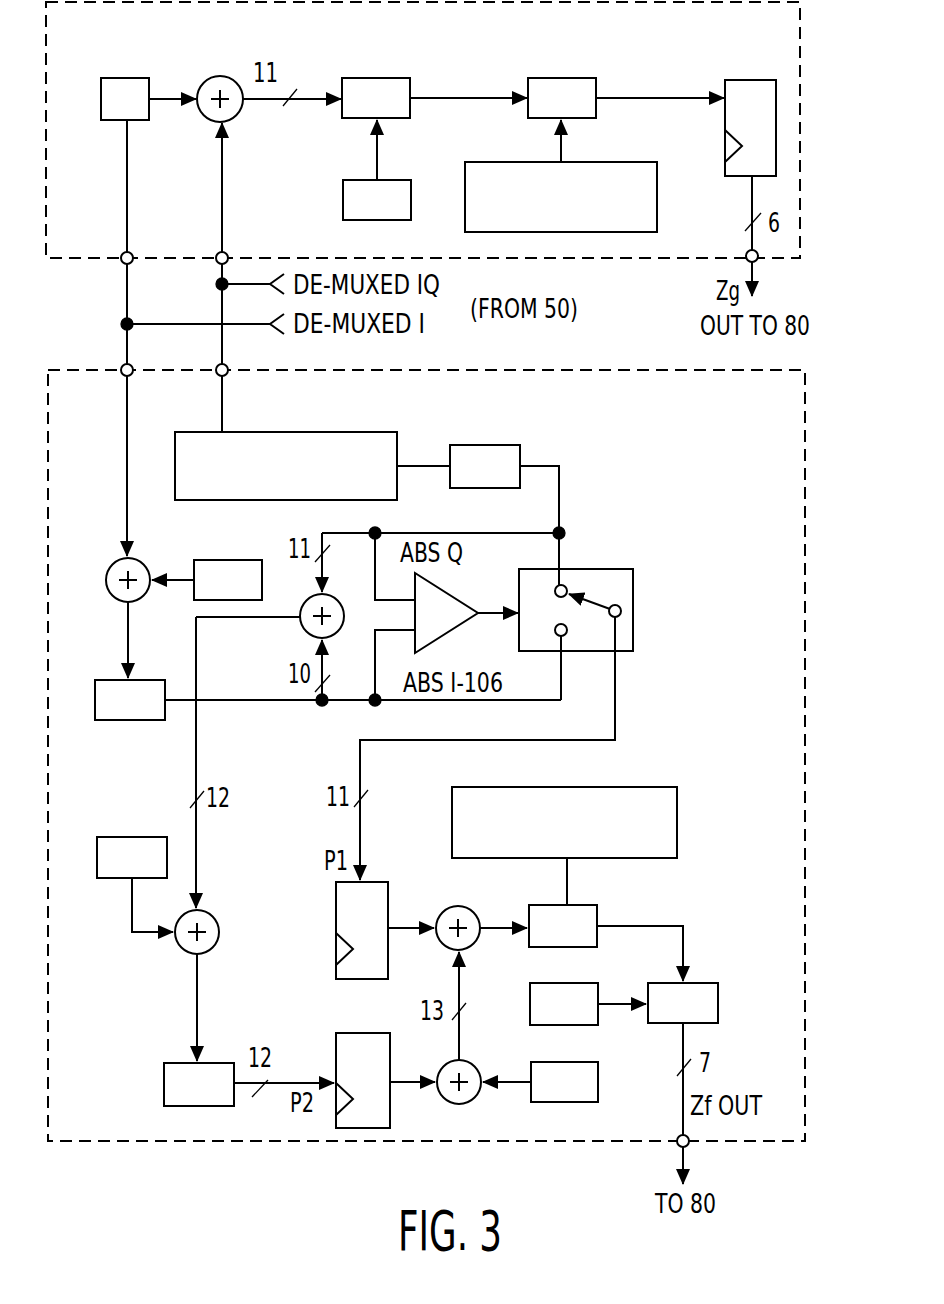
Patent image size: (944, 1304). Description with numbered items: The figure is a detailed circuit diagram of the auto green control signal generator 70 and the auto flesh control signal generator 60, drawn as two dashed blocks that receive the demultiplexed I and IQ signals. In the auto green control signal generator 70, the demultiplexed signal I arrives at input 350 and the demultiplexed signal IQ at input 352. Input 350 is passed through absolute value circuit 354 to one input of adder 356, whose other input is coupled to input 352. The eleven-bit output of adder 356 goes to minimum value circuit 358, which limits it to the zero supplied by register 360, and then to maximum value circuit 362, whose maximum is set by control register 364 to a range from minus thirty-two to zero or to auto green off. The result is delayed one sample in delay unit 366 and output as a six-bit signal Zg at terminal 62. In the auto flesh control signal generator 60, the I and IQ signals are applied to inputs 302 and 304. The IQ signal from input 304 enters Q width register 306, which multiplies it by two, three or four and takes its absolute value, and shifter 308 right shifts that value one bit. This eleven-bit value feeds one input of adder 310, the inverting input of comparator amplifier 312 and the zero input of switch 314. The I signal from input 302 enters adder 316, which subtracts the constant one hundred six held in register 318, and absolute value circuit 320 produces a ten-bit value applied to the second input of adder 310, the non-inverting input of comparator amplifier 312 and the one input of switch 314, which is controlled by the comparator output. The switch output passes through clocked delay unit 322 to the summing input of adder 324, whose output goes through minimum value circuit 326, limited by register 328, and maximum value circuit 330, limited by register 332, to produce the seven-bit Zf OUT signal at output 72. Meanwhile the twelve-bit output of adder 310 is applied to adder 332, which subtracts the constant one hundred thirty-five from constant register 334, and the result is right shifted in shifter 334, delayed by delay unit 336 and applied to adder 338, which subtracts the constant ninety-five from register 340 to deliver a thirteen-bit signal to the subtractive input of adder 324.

The auto green control signal generator 70 is at (759, 44).
The auto flesh control signal generator 60 is at (759, 452).
The absolute value circuit 354 is at (120, 78).
The adder 356 is at (204, 118).
The minimum value circuit 358 is at (350, 118).
The register 360 is at (343, 208).
The maximum value circuit 362 is at (536, 118).
The control register 364 is at (592, 162).
The delay unit 366 is at (725, 170).
The terminal 62 is at (760, 258).
The input 350 is at (122, 253).
The input 352 is at (217, 253).
The input 302 is at (122, 365).
The input 304 is at (217, 365).
The Q width register 306 is at (195, 432).
The shifter 308 is at (522, 455).
The adder 316 is at (110, 566).
The register 318 is at (205, 560).
The adder 310 is at (307, 632).
The comparator amplifier 312 is at (518, 588).
The switch 314 is at (600, 569).
The absolute value circuit 320 is at (125, 720).
The constant register / shifter 334 is at (128, 837).
The adder / register 332 is at (184, 950).
The clocked delay unit 322 is at (336, 906).
The adder 324 is at (448, 910).
The register 328 is at (672, 787).
The minimum value circuit 326 is at (597, 912).
The maximum value circuit 330 is at (718, 996).
The output 72 is at (680, 1147).
The delay unit 336 is at (336, 1037).
The adder 338 is at (466, 1104).
The register 340 is at (598, 1080).